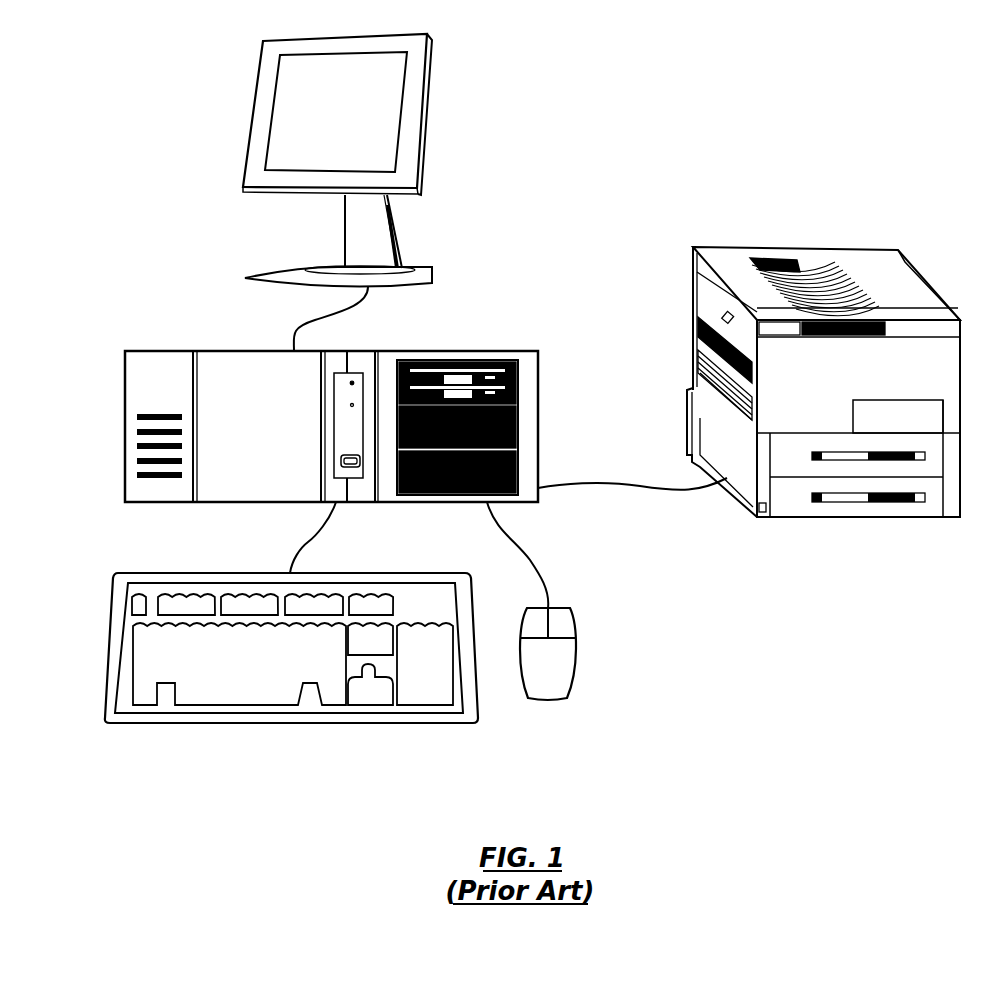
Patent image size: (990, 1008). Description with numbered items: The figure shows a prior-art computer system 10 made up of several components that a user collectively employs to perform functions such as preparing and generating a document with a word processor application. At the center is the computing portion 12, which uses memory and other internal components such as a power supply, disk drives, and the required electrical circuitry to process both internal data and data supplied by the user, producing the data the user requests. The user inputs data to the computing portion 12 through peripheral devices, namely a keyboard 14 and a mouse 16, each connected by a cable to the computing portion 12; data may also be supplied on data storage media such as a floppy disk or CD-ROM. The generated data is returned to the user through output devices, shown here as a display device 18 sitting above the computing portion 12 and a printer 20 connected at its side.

The computer system 10 is at (686, 101).
The computing portion 12 is at (497, 352).
The keyboard 14 is at (113, 608).
The mouse 16 is at (577, 655).
The display device 18 is at (427, 113).
The printer 20 is at (833, 247).